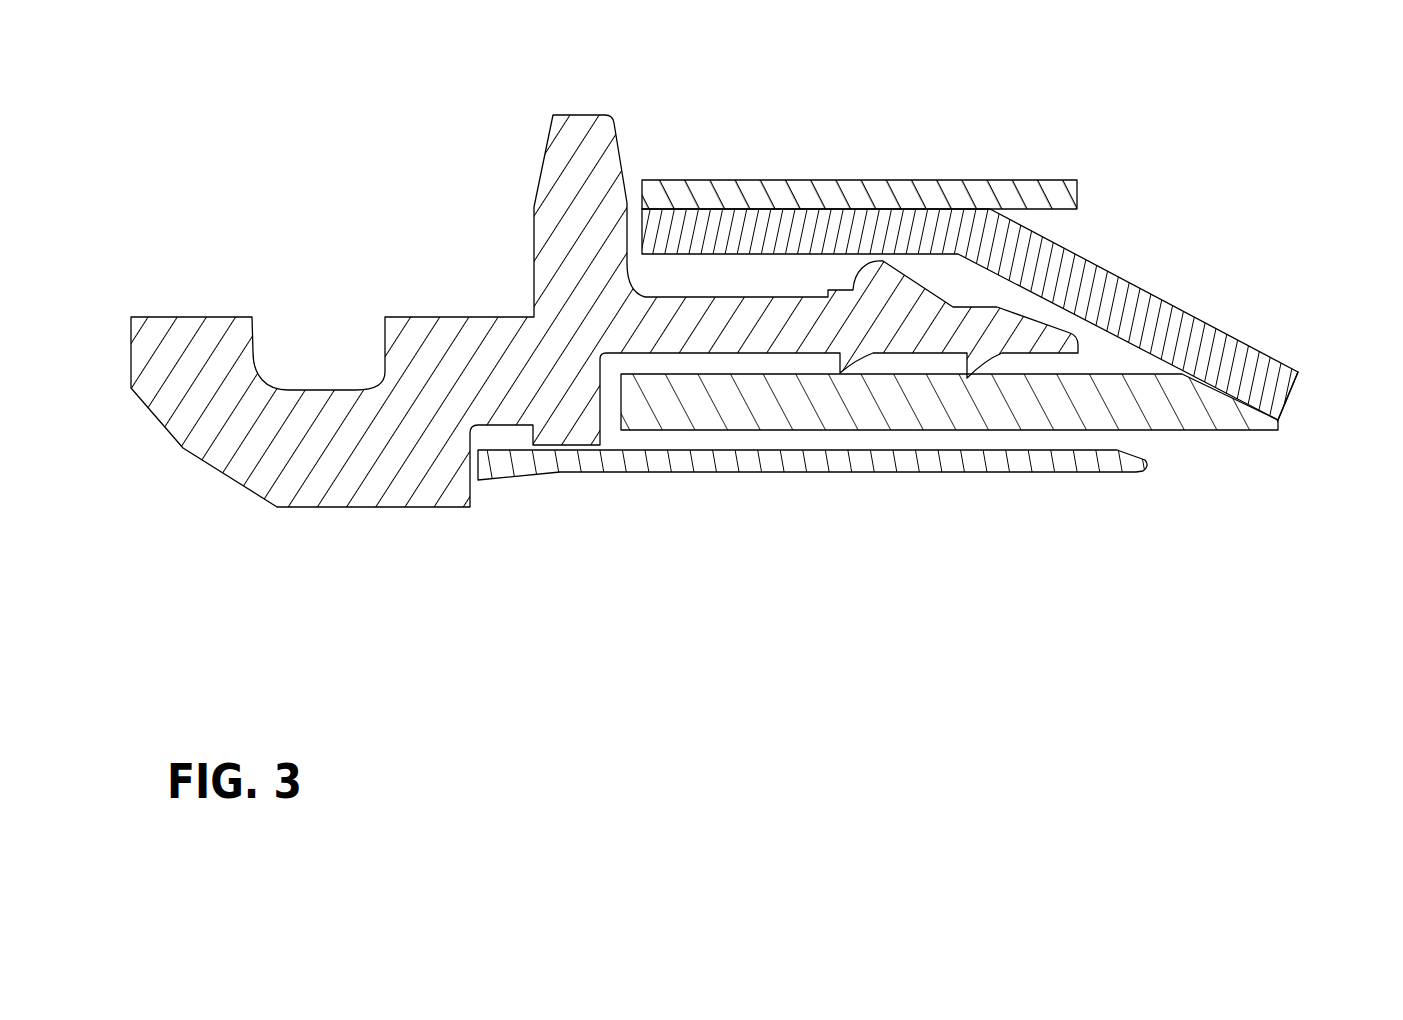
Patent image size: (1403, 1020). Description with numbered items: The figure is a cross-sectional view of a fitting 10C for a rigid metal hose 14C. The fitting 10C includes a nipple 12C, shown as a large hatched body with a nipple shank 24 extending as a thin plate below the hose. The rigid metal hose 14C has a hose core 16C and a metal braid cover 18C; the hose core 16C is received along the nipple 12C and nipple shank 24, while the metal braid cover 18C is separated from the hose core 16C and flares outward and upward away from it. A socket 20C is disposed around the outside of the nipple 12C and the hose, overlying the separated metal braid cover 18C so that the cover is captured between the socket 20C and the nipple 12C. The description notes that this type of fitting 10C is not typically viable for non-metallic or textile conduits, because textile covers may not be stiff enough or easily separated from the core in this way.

The fitting 10C is at (274, 198).
The nipple 12C is at (208, 340).
The rigid metal hose 14C is at (1291, 422).
The hose core 16C is at (1252, 417).
The metal braid cover 18C is at (1165, 313).
The socket 20C is at (797, 192).
The nipple shank 24 is at (1017, 455).